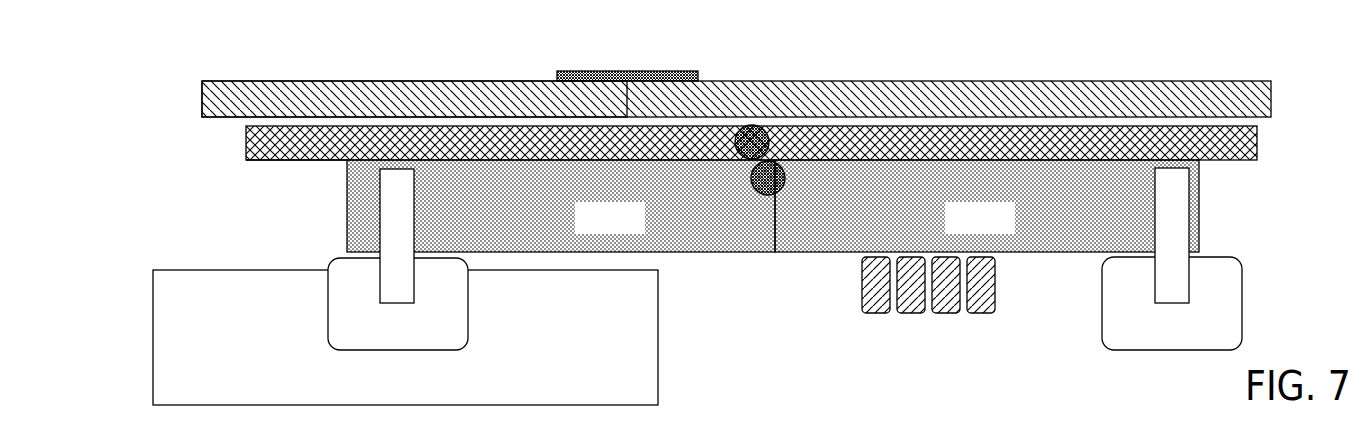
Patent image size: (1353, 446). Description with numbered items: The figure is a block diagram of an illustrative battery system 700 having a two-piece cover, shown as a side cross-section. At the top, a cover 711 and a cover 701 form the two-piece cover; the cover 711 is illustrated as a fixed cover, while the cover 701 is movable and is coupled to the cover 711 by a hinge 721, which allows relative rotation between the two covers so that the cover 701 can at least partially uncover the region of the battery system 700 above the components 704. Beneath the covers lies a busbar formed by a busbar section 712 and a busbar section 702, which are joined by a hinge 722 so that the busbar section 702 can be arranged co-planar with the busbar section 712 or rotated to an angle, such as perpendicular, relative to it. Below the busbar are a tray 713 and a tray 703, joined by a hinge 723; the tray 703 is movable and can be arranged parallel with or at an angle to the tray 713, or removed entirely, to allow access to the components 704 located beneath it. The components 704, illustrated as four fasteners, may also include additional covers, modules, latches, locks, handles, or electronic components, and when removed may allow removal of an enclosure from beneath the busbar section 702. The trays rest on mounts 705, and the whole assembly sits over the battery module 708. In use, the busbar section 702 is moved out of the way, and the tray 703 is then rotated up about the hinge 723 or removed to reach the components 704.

The battery system 700 is at (751, 208).
The cover 701 is at (1272, 93).
The busbar section 702 is at (1257, 148).
The tray 703 is at (999, 229).
The components 704 is at (995, 285).
The mounts 705 is at (451, 340).
The battery module 708 is at (626, 383).
The cover 711 is at (502, 81).
The busbar section 712 is at (275, 160).
The tray 713 is at (629, 229).
The hinge 721 is at (617, 71).
The hinge 722 is at (753, 126).
The hinge 723 is at (783, 195).